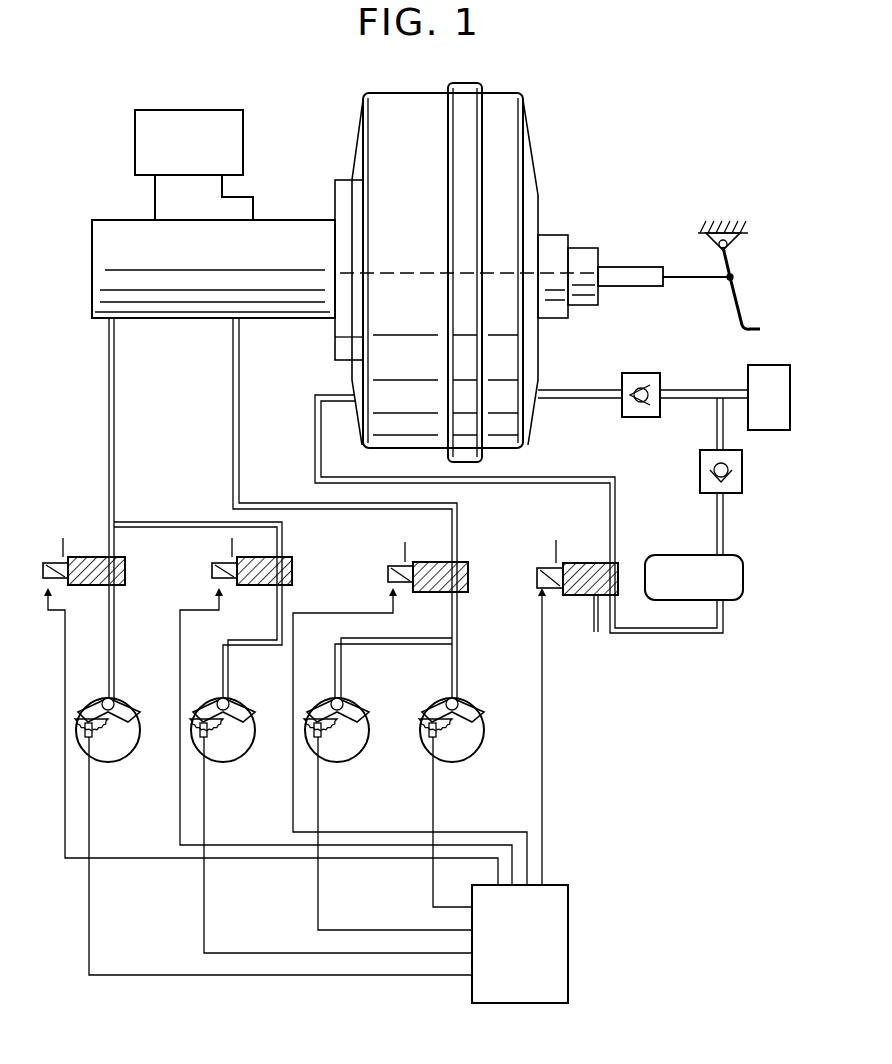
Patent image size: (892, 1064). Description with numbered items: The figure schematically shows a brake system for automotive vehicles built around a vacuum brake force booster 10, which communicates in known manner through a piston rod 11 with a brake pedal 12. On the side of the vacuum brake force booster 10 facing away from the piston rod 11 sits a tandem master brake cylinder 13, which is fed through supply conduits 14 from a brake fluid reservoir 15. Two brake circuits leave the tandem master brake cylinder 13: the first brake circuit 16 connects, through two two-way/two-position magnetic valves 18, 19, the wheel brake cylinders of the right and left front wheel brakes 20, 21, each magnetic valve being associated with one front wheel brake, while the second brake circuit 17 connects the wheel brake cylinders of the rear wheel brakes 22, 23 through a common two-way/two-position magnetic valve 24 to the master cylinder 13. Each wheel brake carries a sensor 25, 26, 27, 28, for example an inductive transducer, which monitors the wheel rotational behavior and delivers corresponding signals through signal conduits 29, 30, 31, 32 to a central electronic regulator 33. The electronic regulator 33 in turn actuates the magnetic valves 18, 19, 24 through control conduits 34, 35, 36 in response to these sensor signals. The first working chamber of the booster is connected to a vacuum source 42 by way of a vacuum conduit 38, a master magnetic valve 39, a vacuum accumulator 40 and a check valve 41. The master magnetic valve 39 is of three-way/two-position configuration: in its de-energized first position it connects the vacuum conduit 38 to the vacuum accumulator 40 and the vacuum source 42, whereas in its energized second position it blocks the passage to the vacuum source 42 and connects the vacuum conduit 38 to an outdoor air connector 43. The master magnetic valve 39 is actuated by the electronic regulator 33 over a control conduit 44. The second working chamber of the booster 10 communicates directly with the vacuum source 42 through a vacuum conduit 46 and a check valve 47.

The vacuum brake force booster 10 is at (556, 96).
The piston rod 11 is at (633, 270).
The brake pedal 12 is at (760, 327).
The tandem master brake cylinder 13 is at (96, 235).
The supply conduits 14 is at (154, 200).
The brake fluid reservoir 15 is at (188, 122).
The first brake circuit 16 is at (115, 438).
The second brake circuit 17 is at (240, 438).
The magnetic valve 18 is at (126, 573).
The magnetic valve 19 is at (294, 573).
The right-hand front wheel brake 20 is at (125, 712).
The left-hand front wheel brake 21 is at (240, 712).
The rear wheel brake 22 is at (354, 712).
The rear wheel brake 23 is at (473, 712).
The common magnetic valve 24 is at (469, 574).
The sensor 25 is at (93, 712).
The sensor 26 is at (208, 712).
The sensor 27 is at (322, 712).
The sensor 28 is at (436, 712).
The signal conduit 29 is at (91, 795).
The signal conduit 30 is at (206, 795).
The signal conduit 31 is at (320, 795).
The signal conduit 32 is at (435, 795).
The central electronic regulator 33 is at (556, 940).
The control conduit 34 is at (144, 860).
The control conduit 35 is at (340, 848).
The control conduit 36 is at (391, 835).
The vacuum conduit 38 is at (562, 481).
The master magnetic valve 39 is at (571, 563).
The vacuum accumulator 40 is at (743, 577).
The check valve 41 is at (704, 466).
The vacuum source 42 is at (768, 428).
The outdoor air connector 43 is at (594, 619).
The control conduit 44 is at (542, 741).
The vacuum conduit 46 is at (560, 390).
The check valve 47 is at (639, 375).